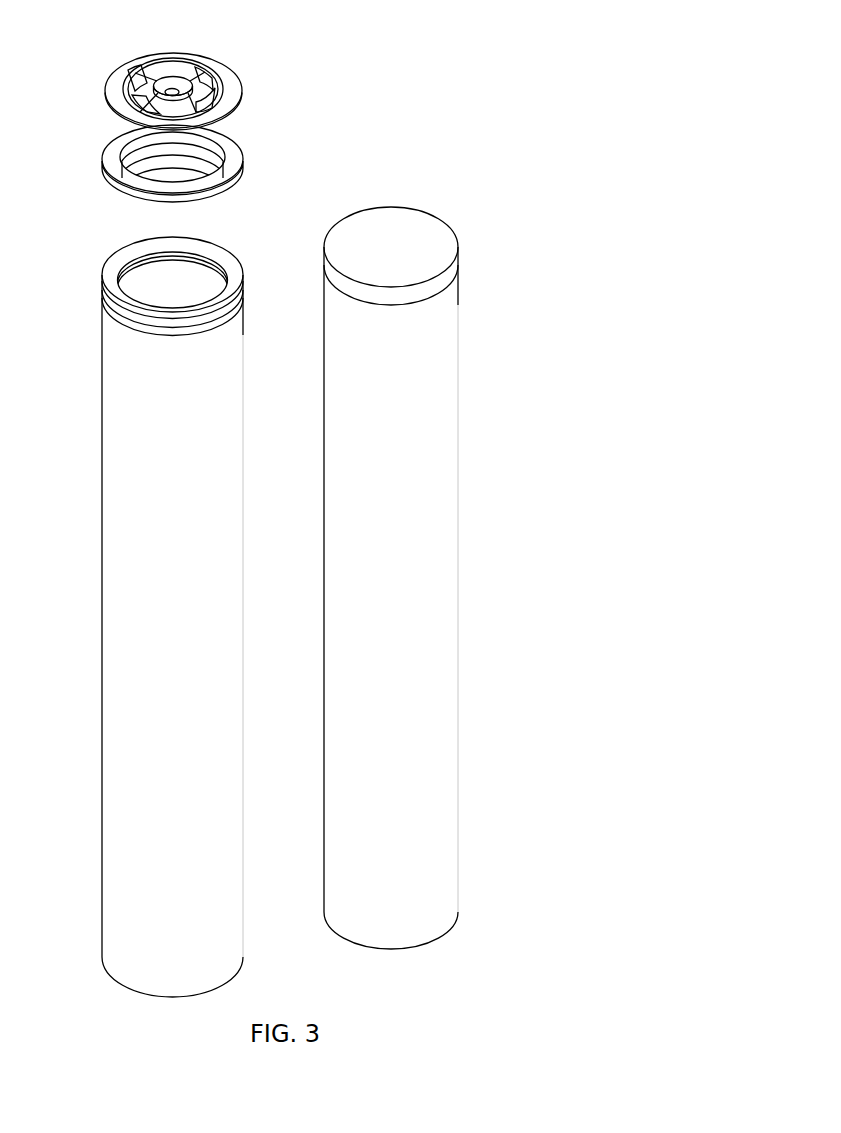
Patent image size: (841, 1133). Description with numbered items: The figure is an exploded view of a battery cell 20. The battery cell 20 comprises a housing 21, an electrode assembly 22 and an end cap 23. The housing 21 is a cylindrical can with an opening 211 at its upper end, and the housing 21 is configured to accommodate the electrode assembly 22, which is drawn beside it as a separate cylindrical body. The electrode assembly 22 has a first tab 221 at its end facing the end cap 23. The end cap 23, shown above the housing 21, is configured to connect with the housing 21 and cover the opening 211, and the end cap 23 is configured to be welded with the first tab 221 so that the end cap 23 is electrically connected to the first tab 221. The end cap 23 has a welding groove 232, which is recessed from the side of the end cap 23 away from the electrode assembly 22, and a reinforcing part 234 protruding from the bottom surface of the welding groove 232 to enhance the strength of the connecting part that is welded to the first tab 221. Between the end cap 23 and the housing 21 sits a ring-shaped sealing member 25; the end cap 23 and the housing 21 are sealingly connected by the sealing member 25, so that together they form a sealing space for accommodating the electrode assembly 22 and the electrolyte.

The battery cell 20 is at (294, 26).
The housing 21 is at (132, 605).
The opening 211 is at (172, 278).
The electrode assembly 22 is at (435, 663).
The first tab 221 is at (435, 250).
The end cap 23 is at (233, 90).
The welding groove 232 is at (130, 88).
The reinforcing part 234 is at (187, 65).
The sealing member 25 is at (228, 165).